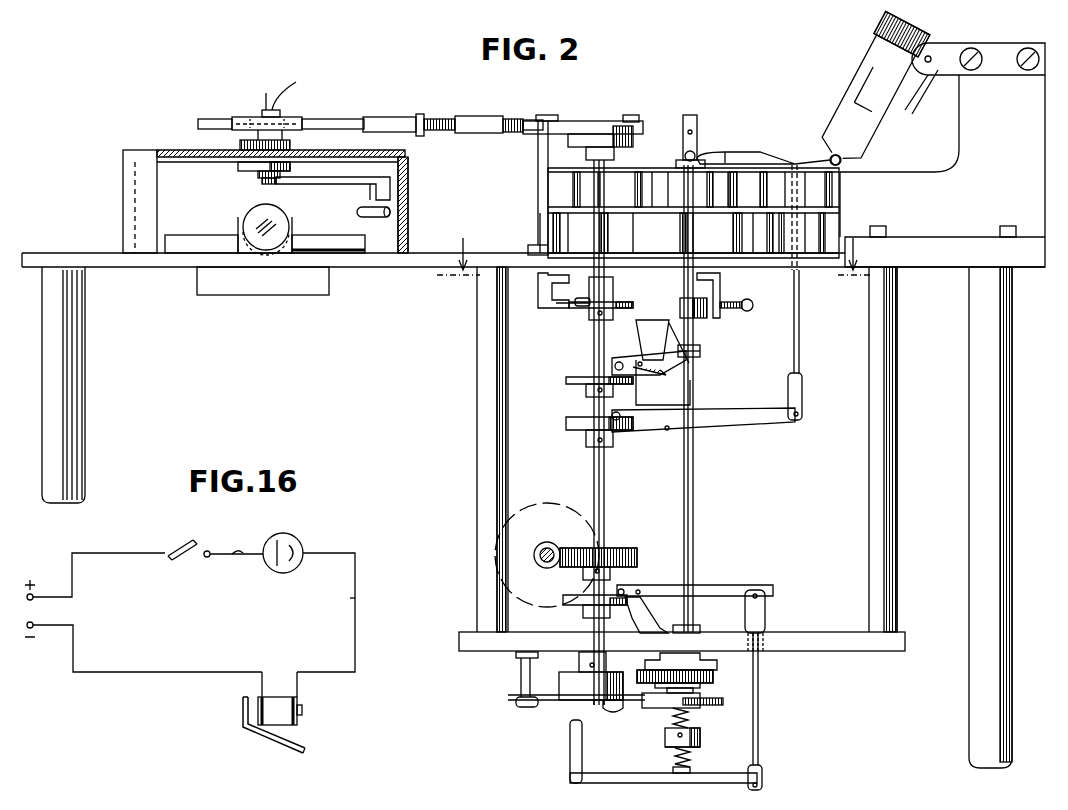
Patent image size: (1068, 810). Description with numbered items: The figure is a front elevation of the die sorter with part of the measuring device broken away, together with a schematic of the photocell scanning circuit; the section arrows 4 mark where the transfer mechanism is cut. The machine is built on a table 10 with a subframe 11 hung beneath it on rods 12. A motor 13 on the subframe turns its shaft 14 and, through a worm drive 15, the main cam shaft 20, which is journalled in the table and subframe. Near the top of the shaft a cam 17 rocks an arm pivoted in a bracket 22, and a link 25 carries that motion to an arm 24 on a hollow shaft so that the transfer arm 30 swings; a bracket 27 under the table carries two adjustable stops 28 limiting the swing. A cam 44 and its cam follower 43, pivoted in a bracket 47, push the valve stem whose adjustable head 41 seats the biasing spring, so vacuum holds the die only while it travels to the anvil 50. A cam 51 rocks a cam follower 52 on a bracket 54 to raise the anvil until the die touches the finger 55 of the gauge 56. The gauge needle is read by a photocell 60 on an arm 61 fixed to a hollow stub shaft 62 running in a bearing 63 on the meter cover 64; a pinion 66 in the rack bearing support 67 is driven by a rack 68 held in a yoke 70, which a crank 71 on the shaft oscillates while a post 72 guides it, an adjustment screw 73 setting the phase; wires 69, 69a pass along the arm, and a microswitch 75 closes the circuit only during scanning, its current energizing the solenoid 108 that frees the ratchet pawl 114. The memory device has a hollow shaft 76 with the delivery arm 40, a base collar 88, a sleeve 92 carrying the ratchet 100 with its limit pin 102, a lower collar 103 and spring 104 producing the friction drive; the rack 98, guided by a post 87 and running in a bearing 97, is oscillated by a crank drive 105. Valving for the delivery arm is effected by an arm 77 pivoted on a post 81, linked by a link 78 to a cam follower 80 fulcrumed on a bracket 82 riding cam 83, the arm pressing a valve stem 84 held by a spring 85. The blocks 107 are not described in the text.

In FIG. 2, the table 10 is at (425, 265).
In FIG. 2, the subframe 11 is at (828, 651).
In FIG. 2, the rods 12 is at (488, 440).
In FIG. 2, the motor 13 is at (548, 525).
In FIG. 2, the shaft 14 is at (540, 565).
In FIG. 2, the worm drive 15 is at (622, 550).
In FIG. 2, the cam 17 is at (605, 305).
In FIG. 2, the cam shaft 20 is at (606, 162).
In FIG. 2, the bracket 22 is at (545, 300).
In FIG. 2, the arm 24 is at (706, 312).
In FIG. 2, the link 25 is at (580, 306).
In FIG. 2, the bracket 27 is at (721, 293).
In FIG. 2, the adjustable stops 28 is at (751, 309).
In FIG. 2, the transfer arm 30 is at (742, 155).
In FIG. 2, the delivery arm 40 is at (697, 148).
In FIG. 2, the adjustable head 41 is at (700, 351).
In FIG. 2, the cam follower 43 is at (612, 362).
In FIG. 2, the cam 44 is at (580, 382).
In FIG. 2, the bracket 47 is at (272, 218).
In FIG. 2, the anvil 50 is at (801, 343).
In FIG. 2, the cam 51 is at (572, 428).
In FIG. 2, the cam follower 52 is at (705, 420).
In FIG. 2, the bracket 54 is at (667, 388).
In FIG. 2, the finger 55 is at (812, 163).
In FIG. 2, the gauge 56 is at (978, 200).
In FIG. 2, the photocell 60 is at (395, 212).
In FIG. 16, the photocell 60 is at (295, 540).
In FIG. 2, the arm 61 is at (350, 180).
In FIG. 2, the hollow stub shaft 62 is at (264, 184).
In FIG. 2, the bearing 63 is at (245, 146).
In FIG. 2, the cover 64 is at (148, 150).
In FIG. 2, the pinion 66 is at (282, 118).
In FIG. 2, the rack bearing support 67 is at (243, 117).
In FIG. 2, the rack 68 is at (347, 118).
In FIG. 2, the wire 69 is at (294, 84).
In FIG. 16, the wire 69 is at (240, 556).
In FIG. 2, the wire 69a is at (258, 87).
In FIG. 16, the wire 69a is at (332, 598).
In FIG. 2, the yoke 70 is at (479, 117).
In FIG. 2, the crank 71 is at (594, 121).
In FIG. 2, the post 72 is at (547, 114).
In FIG. 2, the adjustment screw 73 is at (420, 114).
In FIG. 16, the microswitch 75 is at (178, 545).
In FIG. 2, the hollow shaft 76 is at (696, 138).
In FIG. 2, the cam actuated arm 77 is at (633, 780).
In FIG. 2, the link 78 is at (760, 716).
In FIG. 2, the cam follower 80 is at (705, 592).
In FIG. 2, the post 81 is at (570, 752).
In FIG. 2, the bracket 82 is at (642, 605).
In FIG. 2, the cam 83 is at (580, 602).
In FIG. 2, the valve stem 84 is at (692, 768).
In FIG. 2, the spring 85 is at (676, 763).
In FIG. 2, the post 87 is at (518, 676).
In FIG. 2, the collar 88 is at (700, 746).
In FIG. 2, the sleeve 92 is at (690, 718).
In FIG. 2, the bearing 97 is at (713, 700).
In FIG. 2, the rack 98 is at (592, 703).
In FIG. 2, the ratchet 100 is at (713, 681).
In FIG. 2, the limit pin 102 is at (662, 656).
In FIG. 2, the collar 103 is at (700, 735).
In FIG. 2, the spring 104 is at (668, 712).
In FIG. 2, the crank drive 105 is at (578, 698).
In FIG. 2, the blocks 107 is at (570, 228).
In FIG. 16, the solenoid 108 is at (283, 716).
In FIG. 16, the ratchet pawl 114 is at (258, 740).
In FIG. 2, the section line 4 is at (655, 251).